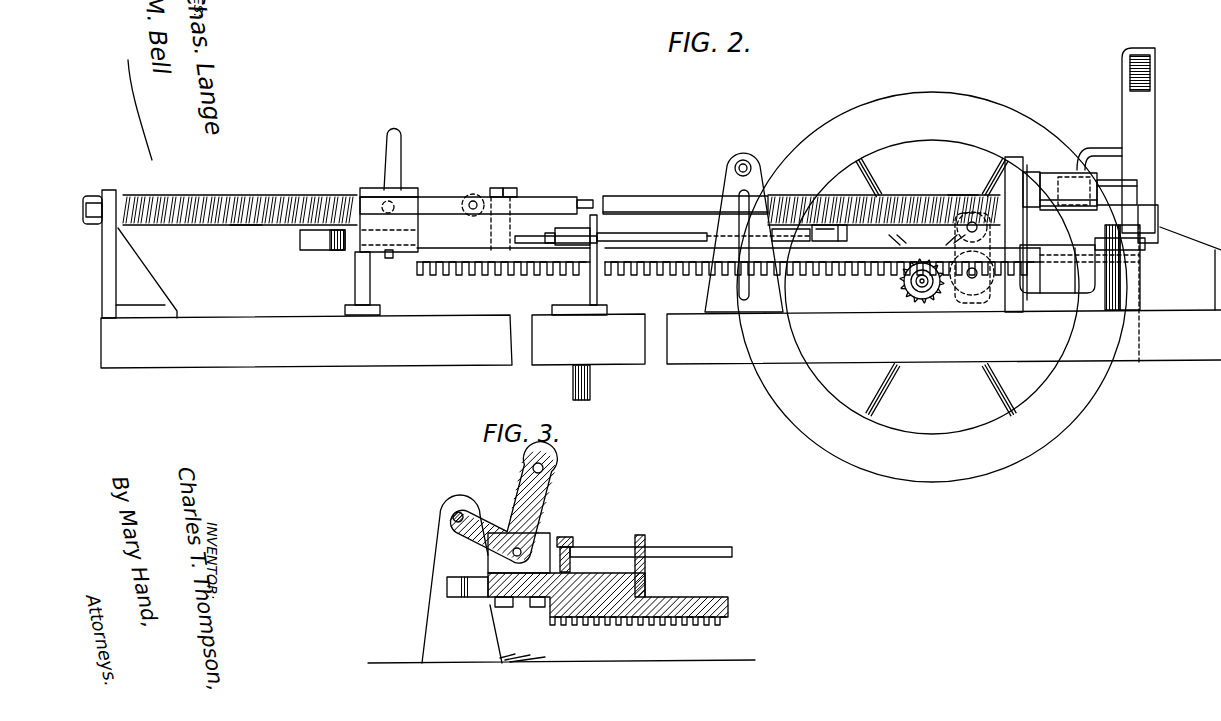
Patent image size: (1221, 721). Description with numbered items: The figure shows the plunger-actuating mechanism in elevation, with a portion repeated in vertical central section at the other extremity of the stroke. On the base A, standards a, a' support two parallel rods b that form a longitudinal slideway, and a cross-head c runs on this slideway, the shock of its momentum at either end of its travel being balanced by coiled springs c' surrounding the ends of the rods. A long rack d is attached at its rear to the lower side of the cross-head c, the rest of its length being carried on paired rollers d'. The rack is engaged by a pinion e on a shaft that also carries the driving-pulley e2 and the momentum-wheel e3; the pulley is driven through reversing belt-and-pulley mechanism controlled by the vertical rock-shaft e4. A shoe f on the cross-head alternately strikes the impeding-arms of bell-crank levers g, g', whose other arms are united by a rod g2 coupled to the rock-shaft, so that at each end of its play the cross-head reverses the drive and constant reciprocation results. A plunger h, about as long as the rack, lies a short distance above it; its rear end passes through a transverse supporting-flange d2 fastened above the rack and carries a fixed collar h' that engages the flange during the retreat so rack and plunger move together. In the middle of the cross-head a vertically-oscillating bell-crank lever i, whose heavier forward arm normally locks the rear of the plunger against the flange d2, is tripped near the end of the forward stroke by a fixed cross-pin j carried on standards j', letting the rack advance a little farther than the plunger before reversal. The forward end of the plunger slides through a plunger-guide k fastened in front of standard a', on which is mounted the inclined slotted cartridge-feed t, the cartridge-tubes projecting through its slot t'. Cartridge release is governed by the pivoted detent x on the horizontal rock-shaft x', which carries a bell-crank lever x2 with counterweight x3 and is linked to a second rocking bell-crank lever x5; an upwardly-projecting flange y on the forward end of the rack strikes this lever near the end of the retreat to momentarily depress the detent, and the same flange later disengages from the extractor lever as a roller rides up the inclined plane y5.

In FIG. 2, the base A is at (661, 339).
In FIG. 2, the standard a is at (130, 242).
In FIG. 2, the standard a' is at (1013, 223).
In FIG. 2, the parallel rods b is at (236, 196).
In FIG. 2, the cross-head c is at (385, 212).
In FIG. 3, the cross-head c is at (525, 541).
In FIG. 2, the coiled springs c' is at (604, 207).
In FIG. 2, the rack d is at (778, 264).
In FIG. 3, the rack d is at (623, 599).
In FIG. 2, the paired rollers d' is at (972, 271).
In FIG. 2, the transverse supporting-flange d2 is at (512, 190).
In FIG. 3, the transverse supporting-flange d2 is at (641, 535).
In FIG. 2, the pinion e is at (922, 305).
In FIG. 2, the driving-pulley e2 is at (860, 230).
In FIG. 2, the momentum-wheel e3 is at (932, 287).
In FIG. 2, the vertical rock-shaft e4 is at (590, 383).
In FIG. 2, the shoe f is at (333, 252).
In FIG. 3, the shoe f is at (476, 599).
In FIG. 2, the bell-crank lever g is at (315, 256).
In FIG. 2, the bell-crank lever g' is at (781, 236).
In FIG. 2, the rod g2 is at (707, 236).
In FIG. 2, the plunger h is at (566, 229).
In FIG. 3, the plunger h is at (664, 551).
In FIG. 2, the fixed collar h' is at (495, 210).
In FIG. 3, the fixed collar h' is at (578, 549).
In FIG. 2, the bell-crank lever i is at (402, 134).
In FIG. 3, the bell-crank lever i is at (541, 497).
In FIG. 2, the fixed cross-pin j is at (743, 150).
In FIG. 3, the fixed cross-pin j is at (440, 508).
In FIG. 2, the standards j' is at (744, 232).
In FIG. 3, the standards j' is at (453, 579).
In FIG. 2, the plunger-guide k is at (1032, 178).
In FIG. 2, the slotted cartridge-feed t is at (1126, 140).
In FIG. 2, the slot t' is at (1151, 73).
In FIG. 2, the pivoted detent x is at (1160, 224).
In FIG. 2, the horizontal rock-shaft x' is at (1117, 192).
In FIG. 2, the bell-crank lever x2 is at (1074, 194).
In FIG. 2, the counterweight x3 is at (1068, 191).
In FIG. 2, the rocking bell-crank lever x5 is at (1148, 252).
In FIG. 2, the upwardly-projecting flange y is at (1146, 242).
In FIG. 2, the inclined plane y5 is at (1203, 240).